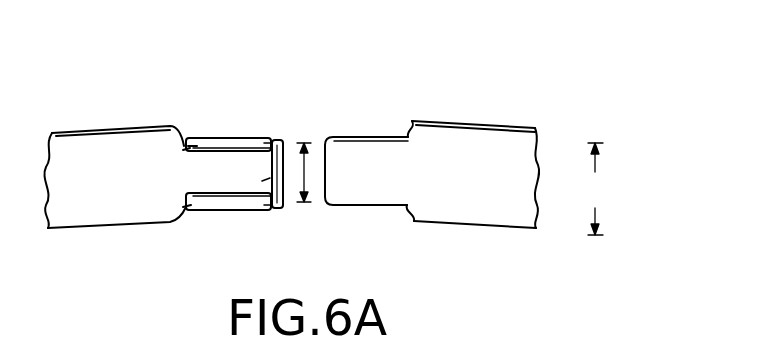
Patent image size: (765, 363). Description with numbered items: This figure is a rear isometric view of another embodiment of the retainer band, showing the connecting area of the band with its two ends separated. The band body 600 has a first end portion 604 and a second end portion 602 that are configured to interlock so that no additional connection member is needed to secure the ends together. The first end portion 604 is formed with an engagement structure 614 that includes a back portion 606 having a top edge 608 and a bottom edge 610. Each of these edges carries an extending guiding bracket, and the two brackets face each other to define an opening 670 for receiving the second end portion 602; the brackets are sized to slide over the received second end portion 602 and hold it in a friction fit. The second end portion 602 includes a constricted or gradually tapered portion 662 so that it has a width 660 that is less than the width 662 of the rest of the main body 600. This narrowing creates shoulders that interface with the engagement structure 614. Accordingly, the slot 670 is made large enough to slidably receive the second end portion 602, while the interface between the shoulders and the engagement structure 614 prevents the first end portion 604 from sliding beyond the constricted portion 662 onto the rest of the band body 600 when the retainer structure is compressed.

The band body 600 is at (495, 131).
The second end portion 602 is at (440, 138).
The first end portion 604 is at (106, 156).
The back portion 606 is at (279, 139).
The top edge 608 is at (233, 138).
The bottom edge 610 is at (200, 211).
The engagement structure 614 is at (205, 138).
The width of the second end portion 660 is at (262, 181).
The width of the main body 662 is at (372, 137).
The opening 670 is at (282, 203).